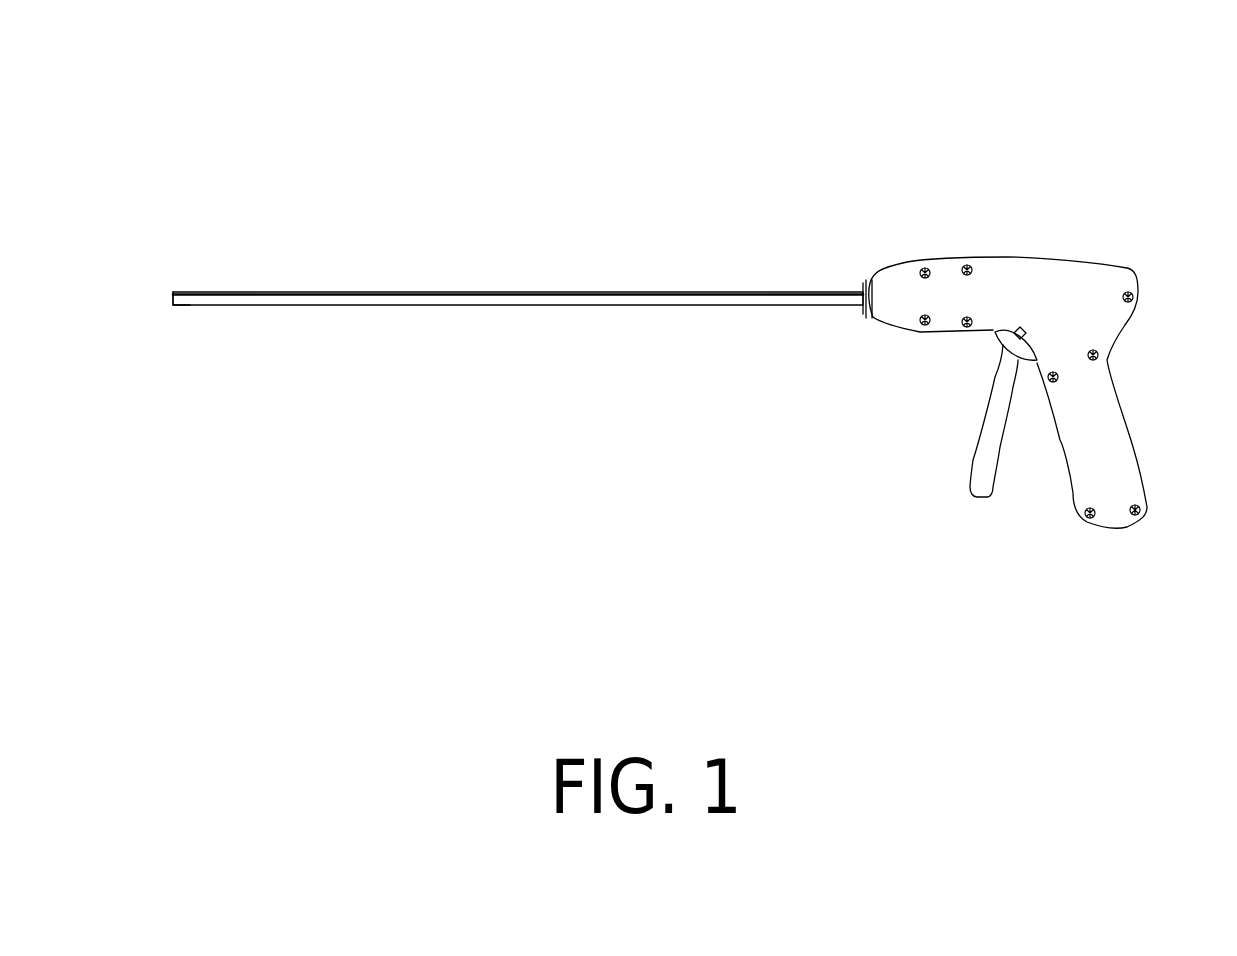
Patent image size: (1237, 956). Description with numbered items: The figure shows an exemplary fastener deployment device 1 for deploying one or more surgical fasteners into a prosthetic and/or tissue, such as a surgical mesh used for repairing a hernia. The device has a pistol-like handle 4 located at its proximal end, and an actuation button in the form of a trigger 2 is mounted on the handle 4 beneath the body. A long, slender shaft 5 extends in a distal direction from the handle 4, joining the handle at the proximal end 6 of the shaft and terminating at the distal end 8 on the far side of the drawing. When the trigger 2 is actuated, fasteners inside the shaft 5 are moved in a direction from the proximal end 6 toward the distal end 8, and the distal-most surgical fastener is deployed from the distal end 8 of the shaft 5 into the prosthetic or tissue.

The fastener deployment device 1 is at (1080, 145).
The trigger 2 is at (990, 467).
The handle 4 is at (1113, 482).
The shaft 5 is at (577, 292).
The proximal end of the shaft 6 is at (860, 290).
The distal end of the shaft 8 is at (183, 292).